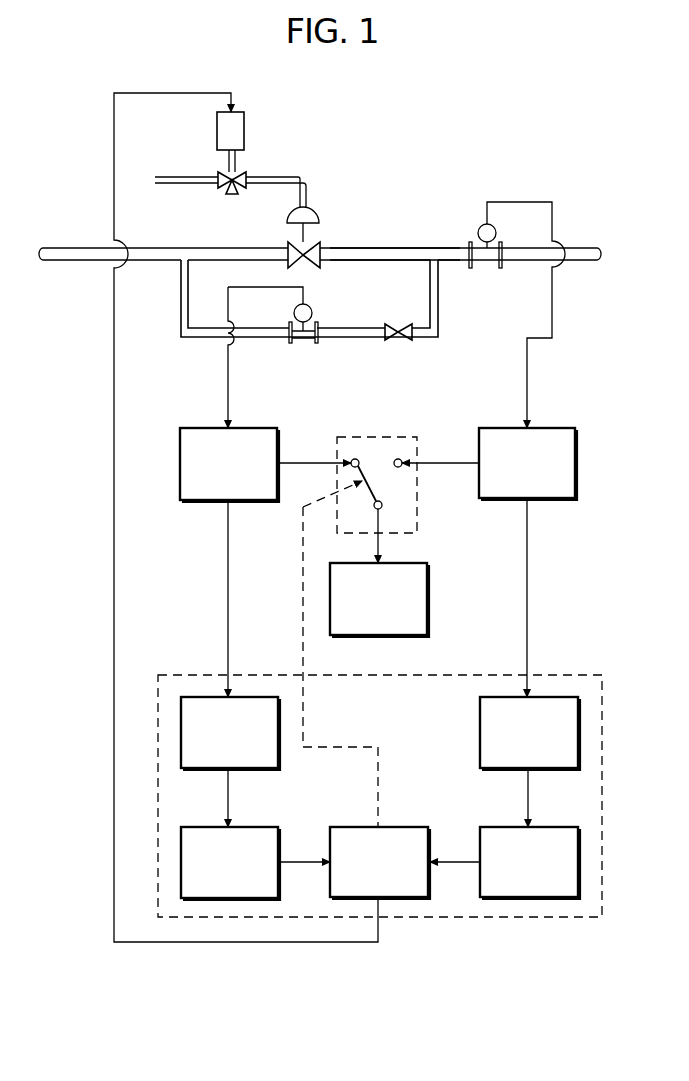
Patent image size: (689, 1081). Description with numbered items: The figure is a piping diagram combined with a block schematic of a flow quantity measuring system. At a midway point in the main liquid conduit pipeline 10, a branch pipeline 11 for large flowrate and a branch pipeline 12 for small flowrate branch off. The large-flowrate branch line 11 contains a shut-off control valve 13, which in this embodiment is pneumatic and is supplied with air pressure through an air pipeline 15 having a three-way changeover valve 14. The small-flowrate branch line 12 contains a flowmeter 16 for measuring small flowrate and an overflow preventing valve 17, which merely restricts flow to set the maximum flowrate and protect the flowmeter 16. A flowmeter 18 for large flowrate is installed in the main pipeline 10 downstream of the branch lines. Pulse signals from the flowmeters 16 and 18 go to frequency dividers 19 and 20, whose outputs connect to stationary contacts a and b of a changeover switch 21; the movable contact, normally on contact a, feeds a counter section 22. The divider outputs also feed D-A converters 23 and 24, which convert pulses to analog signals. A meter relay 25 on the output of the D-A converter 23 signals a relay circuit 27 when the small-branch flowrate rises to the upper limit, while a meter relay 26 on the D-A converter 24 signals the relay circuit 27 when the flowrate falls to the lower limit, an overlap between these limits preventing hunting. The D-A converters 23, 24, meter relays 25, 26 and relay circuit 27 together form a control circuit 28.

The main liquid conduit pipeline 10 is at (83, 246).
The branch pipeline for large flowrate 11 is at (382, 246).
The branch pipeline for small flowrate 12 is at (208, 339).
The shut-off control valve 13 is at (322, 244).
The three-way changeover valve 14 is at (243, 177).
The air pipeline 15 is at (160, 176).
The flowmeter for measuring small flowrate 16 is at (313, 310).
The overflow preventing valve 17 is at (394, 323).
The flowmeter for measuring large flowrate 18 is at (478, 230).
The frequency divider 19 is at (186, 428).
The frequency divider 20 is at (545, 428).
The changeover switch 21 is at (357, 437).
The counter section 22 is at (427, 578).
The digital-analog converter 23 is at (278, 750).
The digital-analog converter 24 is at (480, 750).
The meter relay 25 is at (205, 827).
The meter relay 26 is at (545, 827).
The relay circuit 27 is at (345, 827).
The control circuit 28 is at (602, 830).